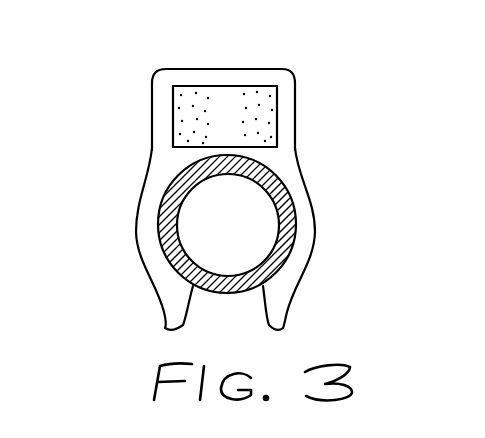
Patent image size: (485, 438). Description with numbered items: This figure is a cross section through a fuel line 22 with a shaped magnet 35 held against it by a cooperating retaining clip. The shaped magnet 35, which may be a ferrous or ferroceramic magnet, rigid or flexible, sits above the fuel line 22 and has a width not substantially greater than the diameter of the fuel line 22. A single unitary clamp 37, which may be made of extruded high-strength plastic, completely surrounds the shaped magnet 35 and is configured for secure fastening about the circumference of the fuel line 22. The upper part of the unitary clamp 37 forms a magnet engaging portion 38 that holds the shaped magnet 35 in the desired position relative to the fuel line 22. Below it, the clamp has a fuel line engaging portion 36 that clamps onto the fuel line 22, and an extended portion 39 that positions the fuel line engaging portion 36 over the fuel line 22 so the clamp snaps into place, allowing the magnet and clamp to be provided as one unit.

The fuel line 22 is at (231, 297).
The shaped magnet 35 is at (228, 86).
The fuel line engaging portion 36 is at (148, 253).
The unitary clamp 37 is at (303, 165).
The magnet engaging portion 38 is at (152, 114).
The extended portion 39 is at (290, 298).